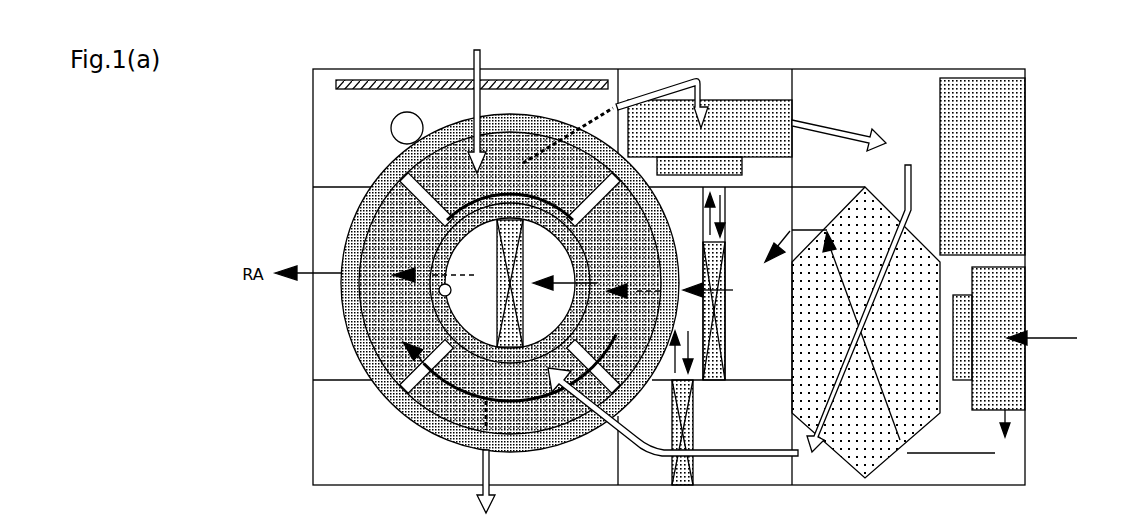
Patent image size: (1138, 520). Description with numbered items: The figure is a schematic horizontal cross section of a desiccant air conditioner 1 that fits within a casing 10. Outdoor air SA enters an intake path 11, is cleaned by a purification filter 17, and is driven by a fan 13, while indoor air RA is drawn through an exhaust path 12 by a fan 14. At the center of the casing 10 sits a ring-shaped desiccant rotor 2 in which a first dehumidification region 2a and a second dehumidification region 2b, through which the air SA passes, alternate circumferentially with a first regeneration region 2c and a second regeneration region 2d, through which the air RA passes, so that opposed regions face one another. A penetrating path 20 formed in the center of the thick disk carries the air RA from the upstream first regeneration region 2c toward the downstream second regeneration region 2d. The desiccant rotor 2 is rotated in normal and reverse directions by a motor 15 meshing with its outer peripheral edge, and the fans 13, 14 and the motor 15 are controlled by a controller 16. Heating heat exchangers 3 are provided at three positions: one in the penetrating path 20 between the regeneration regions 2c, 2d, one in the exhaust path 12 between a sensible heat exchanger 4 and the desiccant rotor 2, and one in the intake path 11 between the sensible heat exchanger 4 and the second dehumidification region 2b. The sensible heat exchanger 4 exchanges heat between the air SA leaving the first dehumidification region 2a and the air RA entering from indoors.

The desiccant air conditioner 1 is at (245, 57).
The casing 10 is at (313, 100).
The intake path 11 is at (482, 65).
The exhaust path 12 is at (1053, 340).
The fan 13 is at (743, 110).
The fan 14 is at (1018, 300).
The motor 15 is at (391, 134).
The controller 16 is at (1018, 107).
The purification filter 17 is at (363, 82).
The desiccant rotor 2 is at (403, 415).
The first dehumidification region 2a is at (517, 143).
The second dehumidification region 2b is at (453, 408).
The first regeneration region 2c is at (427, 207).
The second regeneration region 2d is at (372, 253).
The penetrating path 20 is at (438, 295).
The heating heat exchanger 3 is at (500, 310).
The sensible heat exchanger 4 is at (887, 462).